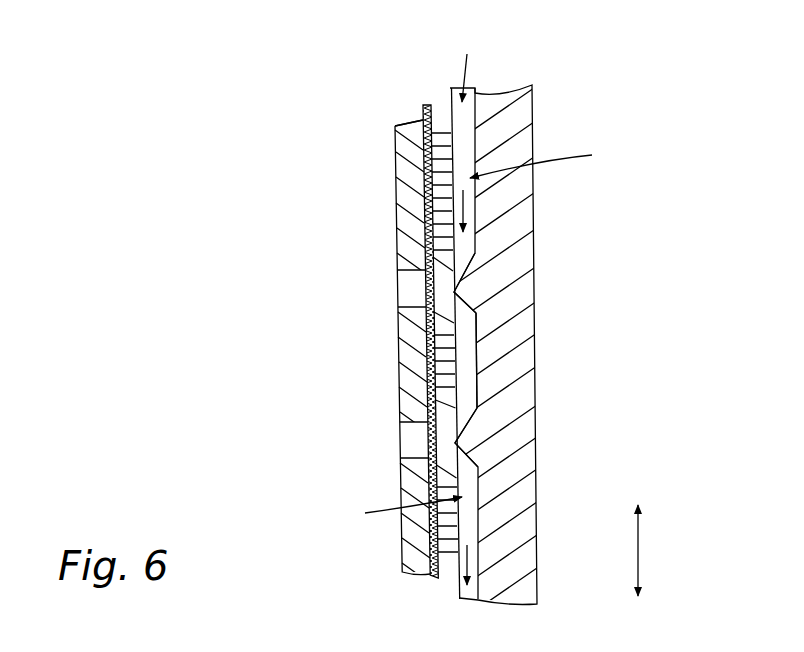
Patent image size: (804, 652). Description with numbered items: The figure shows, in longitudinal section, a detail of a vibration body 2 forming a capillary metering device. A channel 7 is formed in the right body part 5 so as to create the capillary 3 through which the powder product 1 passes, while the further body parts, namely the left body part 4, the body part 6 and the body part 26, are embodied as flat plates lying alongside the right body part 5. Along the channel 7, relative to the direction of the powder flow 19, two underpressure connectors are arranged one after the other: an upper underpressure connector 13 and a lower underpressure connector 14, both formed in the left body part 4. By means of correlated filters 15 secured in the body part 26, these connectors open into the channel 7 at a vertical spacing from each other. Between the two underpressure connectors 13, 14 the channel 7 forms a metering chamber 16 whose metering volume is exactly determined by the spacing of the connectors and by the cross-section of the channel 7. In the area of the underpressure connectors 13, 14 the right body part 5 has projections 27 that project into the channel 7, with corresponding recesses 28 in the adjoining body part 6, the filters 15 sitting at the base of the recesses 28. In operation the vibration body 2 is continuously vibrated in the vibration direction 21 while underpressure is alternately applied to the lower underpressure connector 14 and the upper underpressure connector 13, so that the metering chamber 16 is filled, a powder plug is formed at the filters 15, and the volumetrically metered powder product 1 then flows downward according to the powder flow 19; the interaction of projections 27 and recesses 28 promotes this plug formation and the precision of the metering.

The powder product 1 is at (469, 66).
The vibration body 2 is at (393, 334).
The capillary 3 is at (476, 334).
The left body part 4 is at (405, 167).
The right body part 5 is at (512, 122).
The body part 6 is at (443, 132).
The channel 7 is at (456, 161).
The upper underpressure connector 13 is at (405, 291).
The lower underpressure connector 14 is at (412, 443).
The filters 15 is at (430, 286).
The metering chamber 16 is at (472, 385).
The powder flow 19 is at (472, 228).
The vibration direction 21 is at (640, 556).
The body part 26 is at (412, 133).
The projections 27 is at (456, 291).
The recesses 28 is at (445, 227).